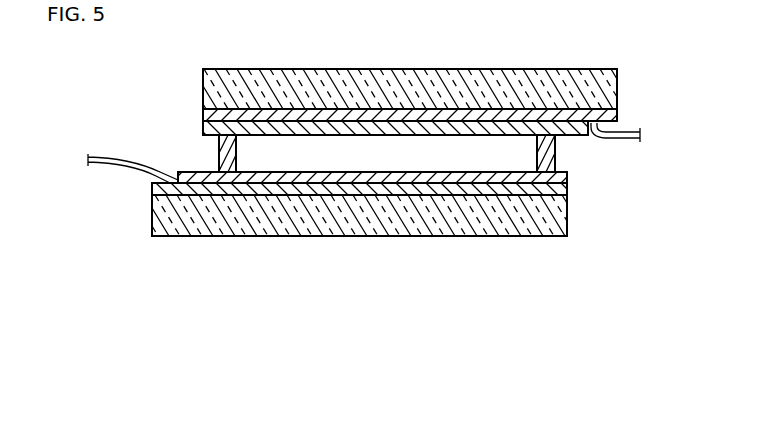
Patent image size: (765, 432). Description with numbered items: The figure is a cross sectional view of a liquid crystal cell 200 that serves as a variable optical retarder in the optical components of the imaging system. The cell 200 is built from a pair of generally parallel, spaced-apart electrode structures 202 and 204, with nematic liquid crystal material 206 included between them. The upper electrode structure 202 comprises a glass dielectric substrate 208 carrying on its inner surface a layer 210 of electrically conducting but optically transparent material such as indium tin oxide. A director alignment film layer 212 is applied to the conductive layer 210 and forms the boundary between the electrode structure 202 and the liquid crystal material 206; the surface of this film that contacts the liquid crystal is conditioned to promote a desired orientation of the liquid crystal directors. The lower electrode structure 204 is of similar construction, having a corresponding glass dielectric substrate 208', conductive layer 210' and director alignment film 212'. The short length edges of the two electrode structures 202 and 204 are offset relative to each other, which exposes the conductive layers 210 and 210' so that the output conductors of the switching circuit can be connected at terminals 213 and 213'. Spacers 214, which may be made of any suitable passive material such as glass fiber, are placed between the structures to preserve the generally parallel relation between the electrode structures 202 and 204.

The liquid crystal cell 200 is at (143, 238).
The electrode structure 202 is at (198, 88).
The electrode structure 204 is at (316, 238).
The nematic liquid crystal material 206 is at (392, 163).
The glass dielectric substrate 208 is at (410, 74).
The glass dielectric substrate 208' is at (323, 215).
The conductive layer 210 is at (377, 102).
The conductive layer 210' is at (322, 186).
The director alignment film layer 212 is at (365, 122).
The director alignment film layer 212' is at (353, 160).
The terminal 213 is at (617, 156).
The terminal 213' is at (131, 147).
The spacer 214 is at (237, 151).